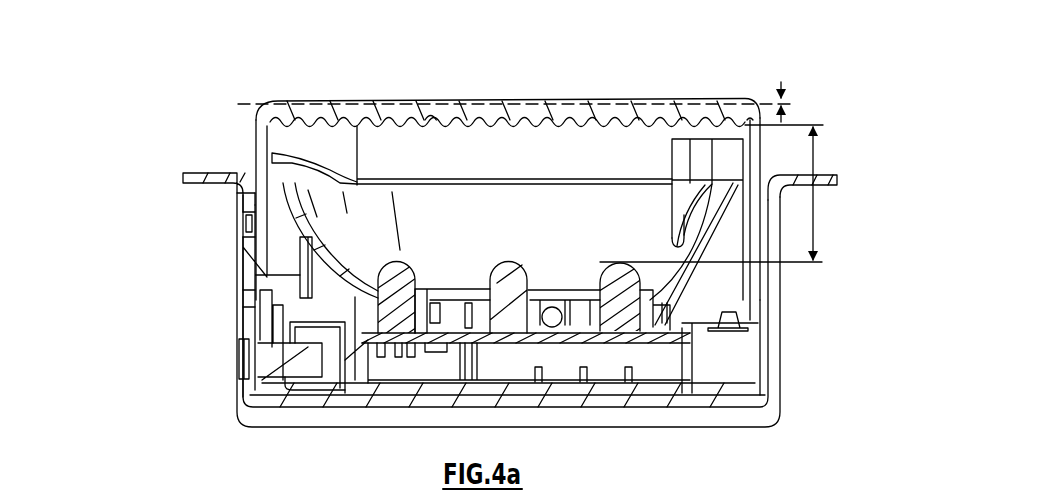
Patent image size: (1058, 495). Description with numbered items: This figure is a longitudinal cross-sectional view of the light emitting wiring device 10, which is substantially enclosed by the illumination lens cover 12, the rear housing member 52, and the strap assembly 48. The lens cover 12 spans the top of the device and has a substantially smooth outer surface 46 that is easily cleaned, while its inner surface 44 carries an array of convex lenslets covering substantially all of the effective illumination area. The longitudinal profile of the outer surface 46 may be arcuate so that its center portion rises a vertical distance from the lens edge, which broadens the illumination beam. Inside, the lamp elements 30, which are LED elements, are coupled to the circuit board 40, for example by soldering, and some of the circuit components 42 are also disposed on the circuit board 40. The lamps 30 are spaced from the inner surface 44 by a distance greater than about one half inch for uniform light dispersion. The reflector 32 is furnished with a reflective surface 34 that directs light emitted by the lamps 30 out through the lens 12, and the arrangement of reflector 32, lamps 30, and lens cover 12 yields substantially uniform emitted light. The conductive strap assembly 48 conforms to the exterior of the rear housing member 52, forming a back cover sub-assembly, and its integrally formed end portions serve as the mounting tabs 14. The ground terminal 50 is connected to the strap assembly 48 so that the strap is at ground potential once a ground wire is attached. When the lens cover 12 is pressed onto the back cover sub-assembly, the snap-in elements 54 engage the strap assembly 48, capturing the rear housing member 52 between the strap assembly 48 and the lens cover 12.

The light emitting wiring device 10 is at (677, 42).
The illumination lens cover 12 is at (522, 100).
The mounting tabs 14 is at (217, 173).
The lamp elements 30 is at (507, 282).
The reflector 32 is at (327, 244).
The reflective surface 34 is at (358, 246).
The circuit board 40 is at (587, 340).
The circuit components 42 is at (550, 307).
The inner surface 44 is at (432, 124).
The outer surface 46 is at (425, 100).
The strap assembly 48 is at (663, 405).
The ground terminal 50 is at (257, 362).
The rear housing member 52 is at (362, 427).
The snap-in elements 54 is at (243, 249).